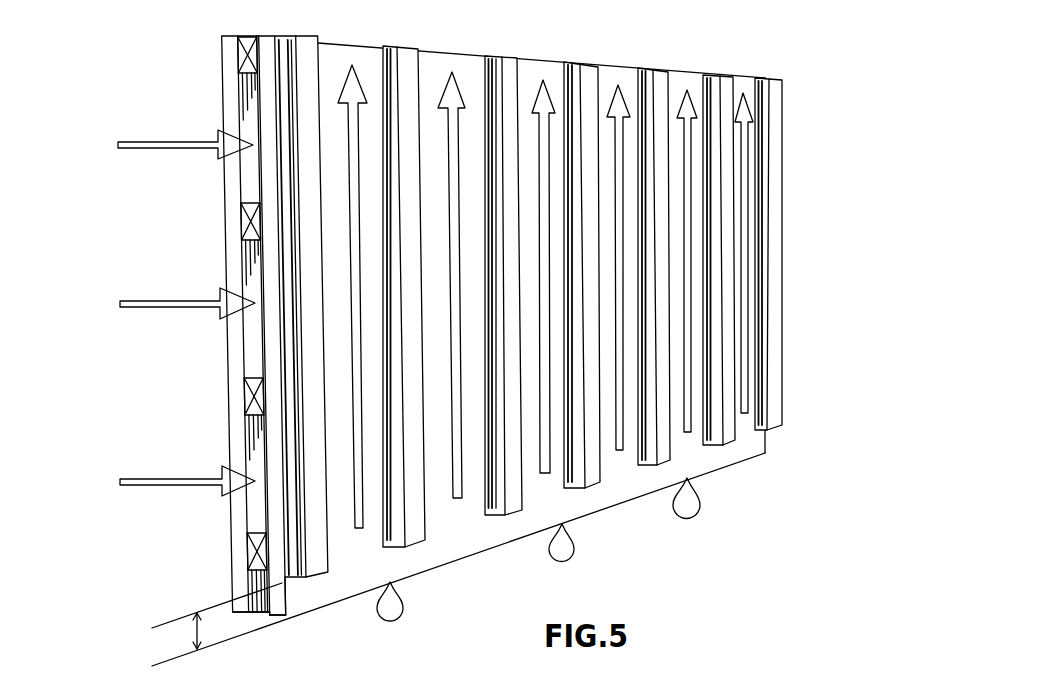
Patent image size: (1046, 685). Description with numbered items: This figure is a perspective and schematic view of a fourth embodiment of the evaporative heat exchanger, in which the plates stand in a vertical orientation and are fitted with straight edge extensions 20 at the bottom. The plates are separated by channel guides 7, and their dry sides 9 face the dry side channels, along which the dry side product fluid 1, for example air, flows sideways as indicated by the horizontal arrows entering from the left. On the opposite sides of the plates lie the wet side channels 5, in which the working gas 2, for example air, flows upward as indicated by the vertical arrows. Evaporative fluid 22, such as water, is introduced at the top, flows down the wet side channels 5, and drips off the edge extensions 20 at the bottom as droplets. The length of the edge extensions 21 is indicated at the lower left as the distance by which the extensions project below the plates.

The dry side product fluid 1 is at (160, 150).
The working gas 2 is at (360, 530).
The wet side channels 5 is at (610, 490).
The channel guides 7 is at (305, 565).
The dry sides of plates 9 is at (246, 172).
The edge extensions 20 is at (232, 606).
The length of edge extensions 21 is at (193, 628).
The evaporative fluid 22 is at (686, 506).